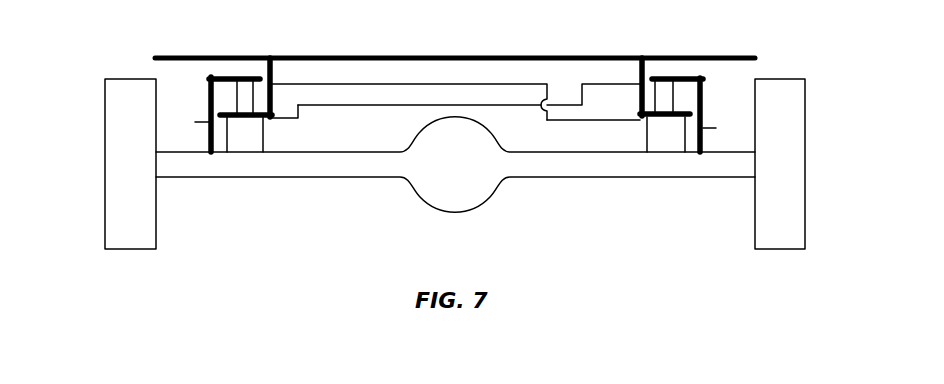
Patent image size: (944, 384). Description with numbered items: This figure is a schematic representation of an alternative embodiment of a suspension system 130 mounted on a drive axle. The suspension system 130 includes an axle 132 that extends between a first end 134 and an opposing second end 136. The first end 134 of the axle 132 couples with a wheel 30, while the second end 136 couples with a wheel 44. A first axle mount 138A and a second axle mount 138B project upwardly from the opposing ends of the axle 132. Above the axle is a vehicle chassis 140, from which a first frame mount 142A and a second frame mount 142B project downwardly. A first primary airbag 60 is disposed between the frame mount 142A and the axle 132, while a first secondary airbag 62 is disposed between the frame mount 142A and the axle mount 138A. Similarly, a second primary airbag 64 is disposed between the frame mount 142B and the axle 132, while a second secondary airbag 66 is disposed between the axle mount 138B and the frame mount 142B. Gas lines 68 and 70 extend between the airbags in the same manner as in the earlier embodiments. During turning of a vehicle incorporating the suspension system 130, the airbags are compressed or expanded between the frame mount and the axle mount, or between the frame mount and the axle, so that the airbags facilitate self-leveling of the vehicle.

The wheel 30 is at (132, 249).
The wheel 44 is at (780, 249).
The first primary airbag 60 is at (248, 140).
The first secondary airbag 62 is at (237, 96).
The second primary airbag 64 is at (662, 140).
The second secondary airbag 66 is at (673, 98).
The gas line 68 is at (378, 108).
The gas line 70 is at (413, 84).
The suspension system 130 is at (668, 27).
The axle 132 is at (347, 172).
The first end 134 is at (210, 192).
The second end 136 is at (687, 183).
The first axle mount 138A is at (200, 122).
The second axle mount 138B is at (715, 128).
The vehicle chassis 140 is at (372, 56).
The first frame mount 142A is at (271, 72).
The second frame mount 142B is at (640, 74).